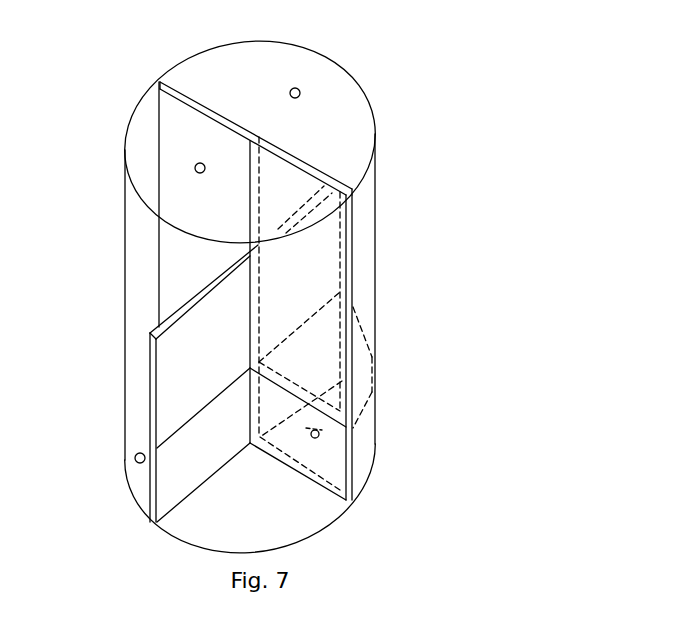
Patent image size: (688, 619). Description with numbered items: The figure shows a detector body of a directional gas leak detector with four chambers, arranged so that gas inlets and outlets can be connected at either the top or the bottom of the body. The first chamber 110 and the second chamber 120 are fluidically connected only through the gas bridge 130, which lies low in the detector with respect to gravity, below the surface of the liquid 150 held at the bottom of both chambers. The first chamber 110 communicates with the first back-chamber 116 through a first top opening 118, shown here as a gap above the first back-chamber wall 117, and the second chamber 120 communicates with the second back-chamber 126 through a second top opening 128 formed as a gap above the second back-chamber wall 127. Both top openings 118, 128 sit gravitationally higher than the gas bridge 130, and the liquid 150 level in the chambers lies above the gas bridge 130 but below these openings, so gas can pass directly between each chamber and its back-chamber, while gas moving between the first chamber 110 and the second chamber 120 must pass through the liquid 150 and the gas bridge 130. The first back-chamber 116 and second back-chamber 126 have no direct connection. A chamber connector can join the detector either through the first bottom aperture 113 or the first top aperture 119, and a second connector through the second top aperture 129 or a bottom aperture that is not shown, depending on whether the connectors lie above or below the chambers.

The first chamber 110 is at (227, 363).
The first bottom aperture 113 is at (135, 457).
The first back-chamber 116 is at (137, 384).
The first back-chamber wall 117 is at (153, 491).
The first top opening 118 is at (203, 287).
The first top aperture 119 is at (195, 166).
The second chamber 120 is at (318, 267).
The second back-chamber 126 is at (270, 165).
The second back-chamber wall 127 is at (325, 240).
The second top opening 128 is at (275, 217).
The second top aperture 129 is at (292, 88).
The gas bridge 130 is at (319, 434).
The liquid 150 is at (362, 460).